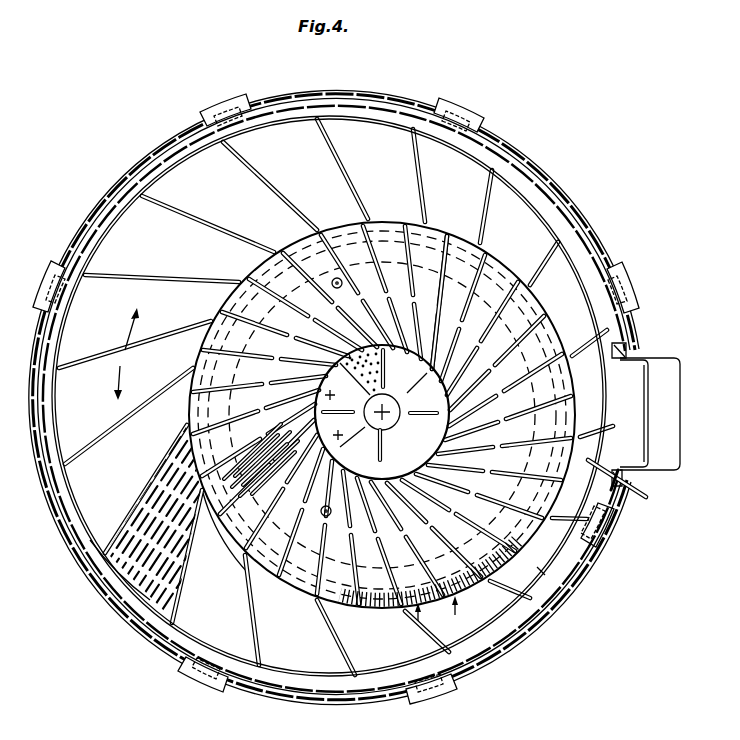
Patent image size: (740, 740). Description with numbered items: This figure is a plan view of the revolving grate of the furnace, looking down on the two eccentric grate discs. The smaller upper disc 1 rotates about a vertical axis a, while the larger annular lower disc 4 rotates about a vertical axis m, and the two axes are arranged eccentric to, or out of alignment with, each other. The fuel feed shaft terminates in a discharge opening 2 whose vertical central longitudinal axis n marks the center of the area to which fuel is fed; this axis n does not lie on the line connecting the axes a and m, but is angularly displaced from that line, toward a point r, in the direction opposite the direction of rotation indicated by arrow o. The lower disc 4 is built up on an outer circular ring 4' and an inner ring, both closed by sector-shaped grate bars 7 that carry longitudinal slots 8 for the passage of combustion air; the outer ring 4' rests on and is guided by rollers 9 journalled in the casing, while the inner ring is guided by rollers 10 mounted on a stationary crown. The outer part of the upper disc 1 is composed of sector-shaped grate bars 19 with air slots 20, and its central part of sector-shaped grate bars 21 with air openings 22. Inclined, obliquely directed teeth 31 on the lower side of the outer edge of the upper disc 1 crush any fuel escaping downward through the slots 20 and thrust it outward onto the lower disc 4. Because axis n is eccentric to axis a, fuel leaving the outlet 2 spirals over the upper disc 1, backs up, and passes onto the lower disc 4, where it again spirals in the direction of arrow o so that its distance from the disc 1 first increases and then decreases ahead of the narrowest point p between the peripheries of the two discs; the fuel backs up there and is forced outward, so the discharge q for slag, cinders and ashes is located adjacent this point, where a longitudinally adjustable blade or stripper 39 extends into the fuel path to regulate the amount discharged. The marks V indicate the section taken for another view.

The upper disc 1 is at (514, 266).
The discharge opening 2 is at (266, 432).
The lower disc 4 is at (334, 398).
The outer circular ring 4' is at (329, 376).
The sector-shaped grate bars 7 is at (143, 597).
The longitudinal slots 8 is at (127, 560).
The rollers 9 is at (255, 101).
The rollers 10 is at (338, 278).
The sector-shaped grate bars 19 is at (233, 517).
The air slots 20 is at (300, 505).
The sector-shaped grate bars 21 is at (436, 355).
The air openings 22 is at (382, 372).
The inclined teeth 31 is at (395, 610).
The adjustable blade or stripper 39 is at (637, 500).
The section line V is at (443, 618).
The axis of rotation of the upper disc a is at (380, 418).
The axis of rotation of the lower disc m is at (338, 386).
The central longitudinal axis of the outlet n is at (332, 427).
The arrow indicating direction of rotation o is at (127, 357).
The narrowest point p is at (610, 533).
The discharge q is at (633, 357).
The point r is at (537, 567).